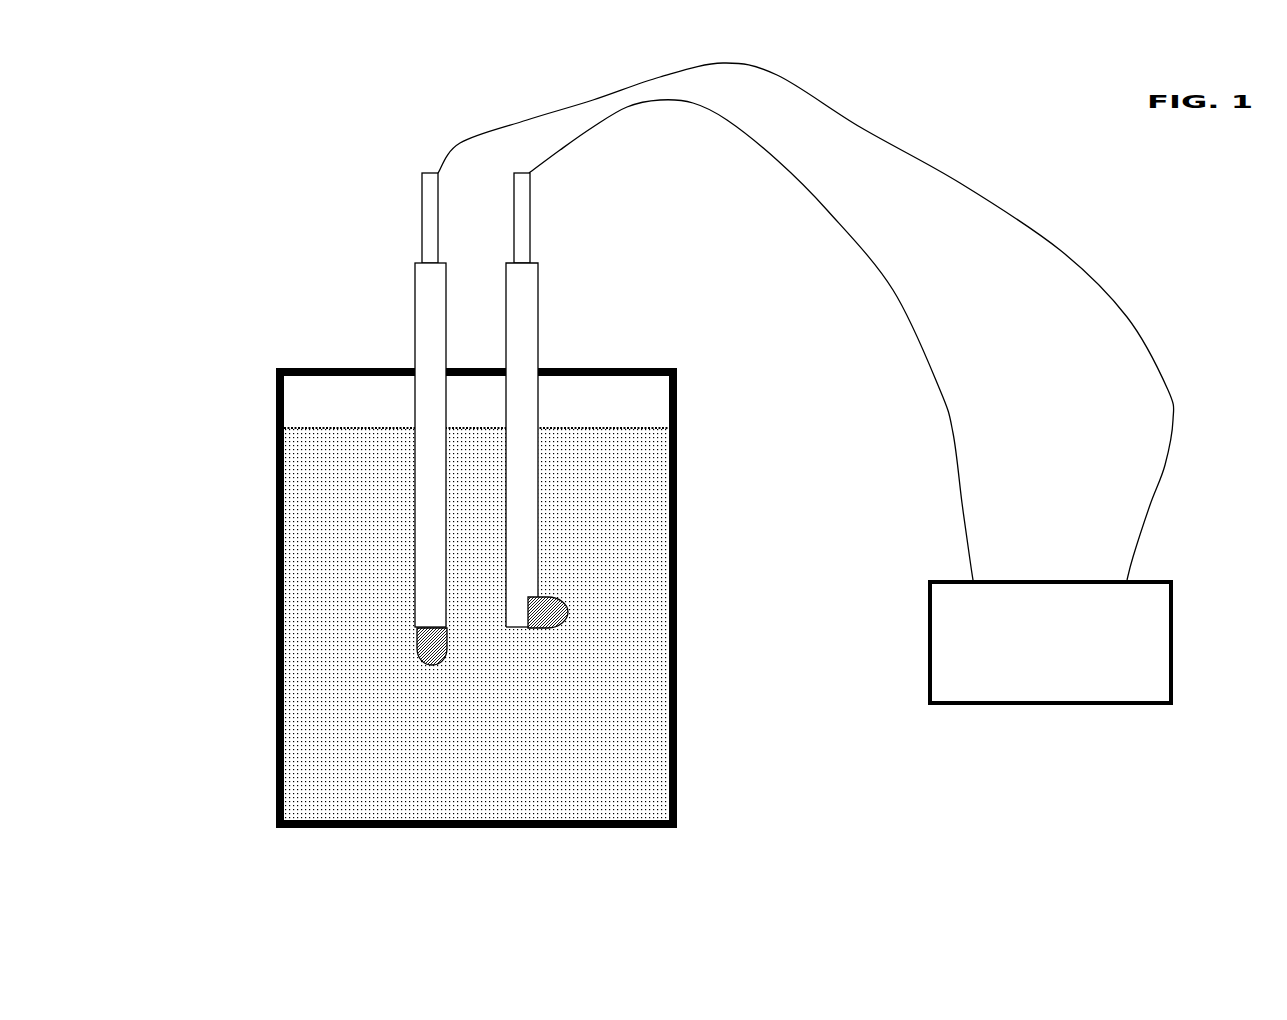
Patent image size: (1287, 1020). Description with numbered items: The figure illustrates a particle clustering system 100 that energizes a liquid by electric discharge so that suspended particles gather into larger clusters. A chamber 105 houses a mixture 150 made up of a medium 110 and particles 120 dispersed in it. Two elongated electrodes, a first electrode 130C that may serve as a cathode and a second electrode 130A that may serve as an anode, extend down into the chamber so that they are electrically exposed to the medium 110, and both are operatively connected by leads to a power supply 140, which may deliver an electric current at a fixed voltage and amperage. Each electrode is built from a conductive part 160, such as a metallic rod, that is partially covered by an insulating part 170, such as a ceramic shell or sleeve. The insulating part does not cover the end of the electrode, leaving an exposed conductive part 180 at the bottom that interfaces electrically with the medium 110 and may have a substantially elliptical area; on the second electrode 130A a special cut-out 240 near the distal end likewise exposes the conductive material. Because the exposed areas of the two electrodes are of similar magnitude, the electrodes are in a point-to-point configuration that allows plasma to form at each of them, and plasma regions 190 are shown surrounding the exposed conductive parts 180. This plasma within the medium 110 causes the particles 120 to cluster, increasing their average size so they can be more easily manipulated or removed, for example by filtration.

The particle clustering system 100 is at (1163, 870).
The chamber 105 is at (677, 732).
The medium 110 is at (307, 673).
The particles 120 is at (307, 733).
The second electrode 130A is at (530, 215).
The first electrode 130C is at (423, 215).
The power supply 140 is at (1050, 642).
The mixture 150 is at (337, 428).
The conductive part 160 is at (422, 248).
The insulating part 170 is at (415, 398).
The exposed conductive part 180 is at (547, 593).
The plasma region 190 is at (528, 608).
The cut-out 240 is at (533, 630).